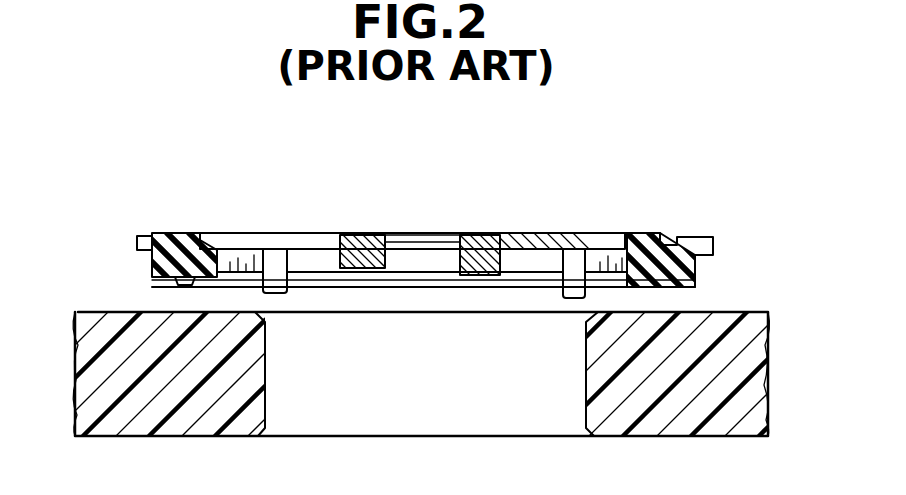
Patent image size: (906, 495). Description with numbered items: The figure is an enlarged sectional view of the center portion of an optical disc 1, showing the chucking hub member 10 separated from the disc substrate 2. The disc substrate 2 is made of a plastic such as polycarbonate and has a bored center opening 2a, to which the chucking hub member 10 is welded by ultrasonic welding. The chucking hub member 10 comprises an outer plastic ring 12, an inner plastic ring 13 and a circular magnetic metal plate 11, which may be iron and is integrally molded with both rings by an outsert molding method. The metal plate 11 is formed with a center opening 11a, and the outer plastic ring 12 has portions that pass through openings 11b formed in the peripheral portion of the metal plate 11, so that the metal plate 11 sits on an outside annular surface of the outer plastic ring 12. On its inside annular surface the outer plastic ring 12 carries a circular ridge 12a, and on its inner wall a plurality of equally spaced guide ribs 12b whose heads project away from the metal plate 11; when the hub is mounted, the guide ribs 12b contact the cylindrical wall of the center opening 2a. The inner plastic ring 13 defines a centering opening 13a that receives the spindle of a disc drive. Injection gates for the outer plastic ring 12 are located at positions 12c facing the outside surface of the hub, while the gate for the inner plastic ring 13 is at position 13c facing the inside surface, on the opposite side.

The filter apparatus (prior art) 1 is at (100, 292).
The disc substrate 2 is at (676, 436).
The center opening 2a is at (265, 375).
The chucking hub member 10 is at (590, 222).
The circular magnetic metal plate 11 is at (527, 233).
The center opening 11a is at (394, 233).
The openings 11b is at (672, 238).
The outer plastic ring 12 is at (698, 270).
The circular ridge 12a is at (185, 285).
The guide ribs 12b is at (275, 295).
The injection gate positions 12c is at (178, 238).
The inner plastic ring 13 is at (497, 275).
The centering opening 13a is at (466, 235).
The injection gate position 13c is at (357, 272).